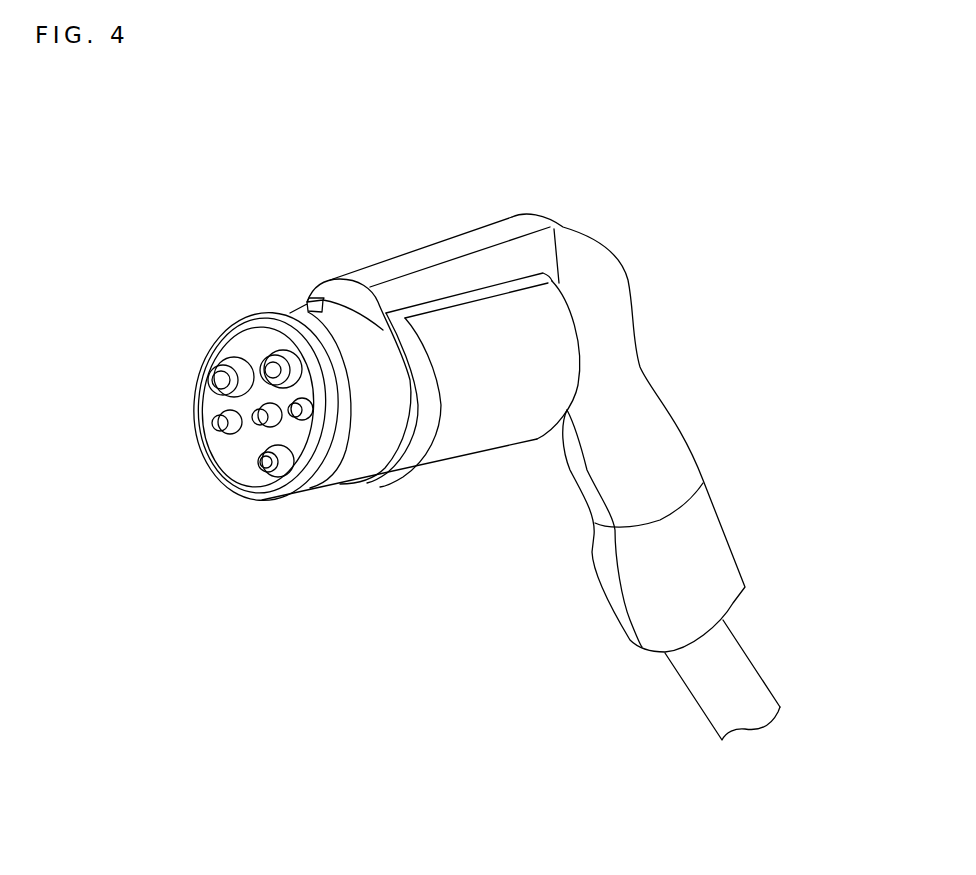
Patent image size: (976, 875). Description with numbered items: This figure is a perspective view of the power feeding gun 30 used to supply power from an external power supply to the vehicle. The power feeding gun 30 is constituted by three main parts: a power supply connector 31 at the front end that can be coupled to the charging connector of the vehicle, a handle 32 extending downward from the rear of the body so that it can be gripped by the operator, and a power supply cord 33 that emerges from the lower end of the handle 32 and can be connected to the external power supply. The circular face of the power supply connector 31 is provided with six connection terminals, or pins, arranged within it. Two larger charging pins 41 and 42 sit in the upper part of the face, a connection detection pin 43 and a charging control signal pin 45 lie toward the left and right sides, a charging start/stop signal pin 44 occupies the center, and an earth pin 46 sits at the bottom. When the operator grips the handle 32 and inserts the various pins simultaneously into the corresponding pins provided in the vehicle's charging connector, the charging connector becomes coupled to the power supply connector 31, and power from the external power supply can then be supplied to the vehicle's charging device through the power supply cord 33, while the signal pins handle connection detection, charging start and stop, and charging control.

The power feeding gun 30 is at (322, 229).
The power supply connector 31 is at (222, 447).
The handle 32 is at (640, 413).
The power supply cord 33 is at (727, 677).
The charging pin 41 is at (221, 378).
The charging pin 42 is at (277, 370).
The connection detection pin 43 is at (218, 424).
The charging start/stop signal pin 44 is at (260, 420).
The charging control signal pin 45 is at (300, 415).
The earth pin 46 is at (276, 470).